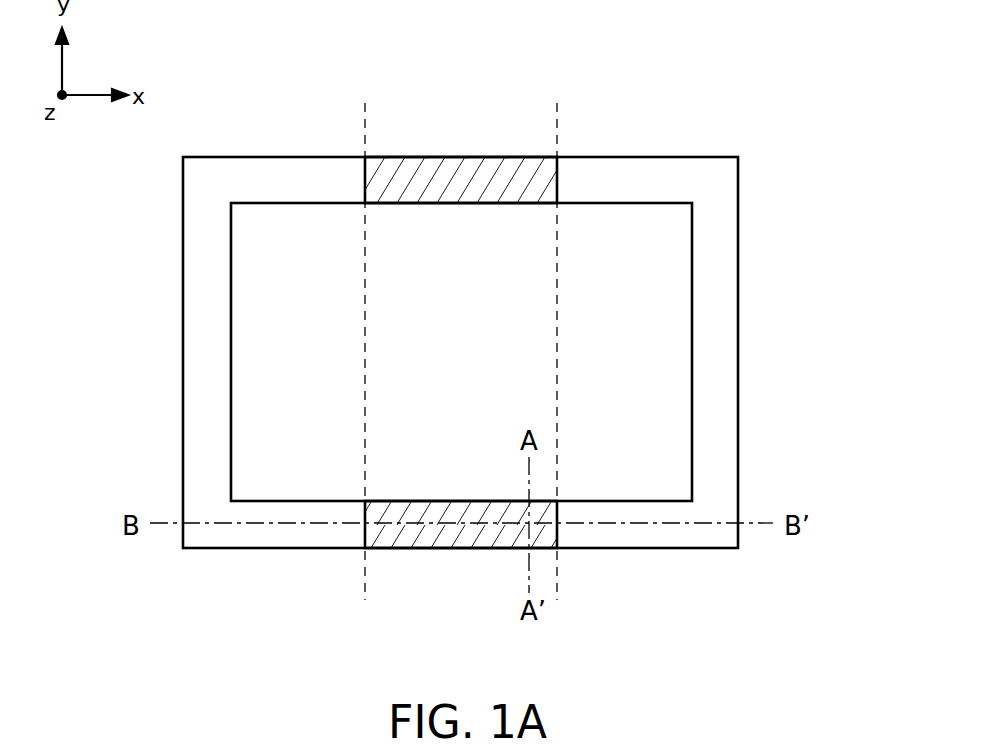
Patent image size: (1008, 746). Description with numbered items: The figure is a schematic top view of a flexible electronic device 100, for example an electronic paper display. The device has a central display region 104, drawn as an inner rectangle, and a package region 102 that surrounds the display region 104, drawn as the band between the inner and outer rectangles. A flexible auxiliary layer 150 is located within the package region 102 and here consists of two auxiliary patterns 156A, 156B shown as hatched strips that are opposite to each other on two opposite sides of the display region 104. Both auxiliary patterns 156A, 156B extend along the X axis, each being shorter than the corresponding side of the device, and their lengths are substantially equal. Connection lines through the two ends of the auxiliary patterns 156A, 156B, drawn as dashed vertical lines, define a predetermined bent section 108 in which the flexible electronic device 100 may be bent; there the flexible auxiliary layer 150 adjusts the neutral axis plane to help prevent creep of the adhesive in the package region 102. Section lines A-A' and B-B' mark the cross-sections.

The flexible electronic device 100 is at (511, 355).
The package region 102 is at (713, 215).
The display region 104 is at (665, 258).
The predetermined bent section 108 is at (557, 110).
The flexible auxiliary layer 150 is at (532, 354).
The auxiliary pattern 156A is at (525, 185).
The auxiliary pattern 156B is at (428, 535).